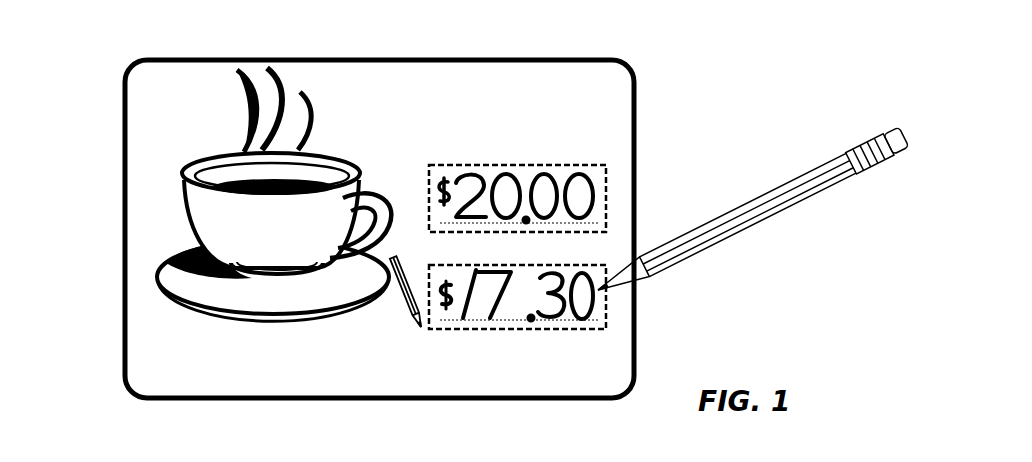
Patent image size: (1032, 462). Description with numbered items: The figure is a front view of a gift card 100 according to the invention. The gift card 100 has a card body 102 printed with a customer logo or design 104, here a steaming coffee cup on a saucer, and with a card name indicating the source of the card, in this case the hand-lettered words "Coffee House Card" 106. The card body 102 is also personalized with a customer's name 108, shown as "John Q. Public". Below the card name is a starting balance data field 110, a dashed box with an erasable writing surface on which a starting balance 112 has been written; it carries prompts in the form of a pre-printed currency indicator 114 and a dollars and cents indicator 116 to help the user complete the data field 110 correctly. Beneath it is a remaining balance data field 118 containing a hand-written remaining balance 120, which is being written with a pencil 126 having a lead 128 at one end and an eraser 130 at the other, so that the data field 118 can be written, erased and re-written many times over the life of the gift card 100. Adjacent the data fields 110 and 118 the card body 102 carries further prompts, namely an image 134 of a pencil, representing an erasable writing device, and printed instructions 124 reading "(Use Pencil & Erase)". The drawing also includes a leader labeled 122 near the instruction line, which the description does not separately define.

The gift card 100 is at (107, 139).
The card body 102 is at (143, 378).
The customer logo or design 104 is at (232, 131).
The card name 106 is at (520, 80).
The customer's name 108 is at (272, 365).
The starting balance data field 110 is at (494, 119).
The starting balance 112 is at (606, 180).
The currency indicator 114 is at (432, 186).
The dollars and cents indicator 116 is at (606, 225).
The remaining balance data field 118 is at (606, 325).
The remaining balance 120 is at (606, 312).
The instruction text 122 is at (450, 365).
The instructions 124 is at (505, 374).
The pencil 126 is at (785, 245).
The lead 128 is at (607, 290).
The eraser 130 is at (905, 155).
The image of a pencil 134 is at (420, 330).